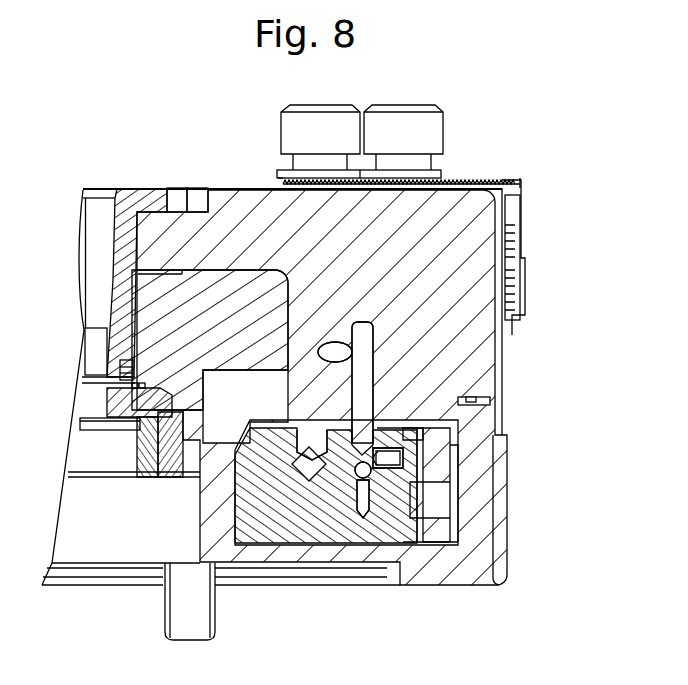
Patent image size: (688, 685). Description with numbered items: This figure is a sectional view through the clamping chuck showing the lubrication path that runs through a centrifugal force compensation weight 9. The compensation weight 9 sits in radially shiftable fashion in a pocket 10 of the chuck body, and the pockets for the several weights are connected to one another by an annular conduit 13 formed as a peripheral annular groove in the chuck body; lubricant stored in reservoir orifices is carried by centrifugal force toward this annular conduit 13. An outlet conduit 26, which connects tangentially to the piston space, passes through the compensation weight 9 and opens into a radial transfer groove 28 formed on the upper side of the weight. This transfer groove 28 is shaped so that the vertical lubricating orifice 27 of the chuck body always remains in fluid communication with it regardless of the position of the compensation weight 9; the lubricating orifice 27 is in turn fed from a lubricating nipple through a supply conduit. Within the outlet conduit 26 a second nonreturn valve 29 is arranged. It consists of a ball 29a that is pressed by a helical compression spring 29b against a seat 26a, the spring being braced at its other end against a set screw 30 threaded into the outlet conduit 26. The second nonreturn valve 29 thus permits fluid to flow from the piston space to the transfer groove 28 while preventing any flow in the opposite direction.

The lubricating orifice 27 is at (374, 352).
The set screw 30 is at (370, 360).
The annular conduit 13 is at (445, 428).
The helical compression spring 29b is at (405, 458).
The outlet conduit 26 is at (420, 470).
The ball 29a is at (378, 480).
The pocket 10 is at (442, 533).
The transfer groove 28 is at (338, 490).
The second nonreturn valve 29 is at (340, 496).
The centrifugal force compensation weight 9 is at (380, 492).
The seat 26a is at (380, 468).